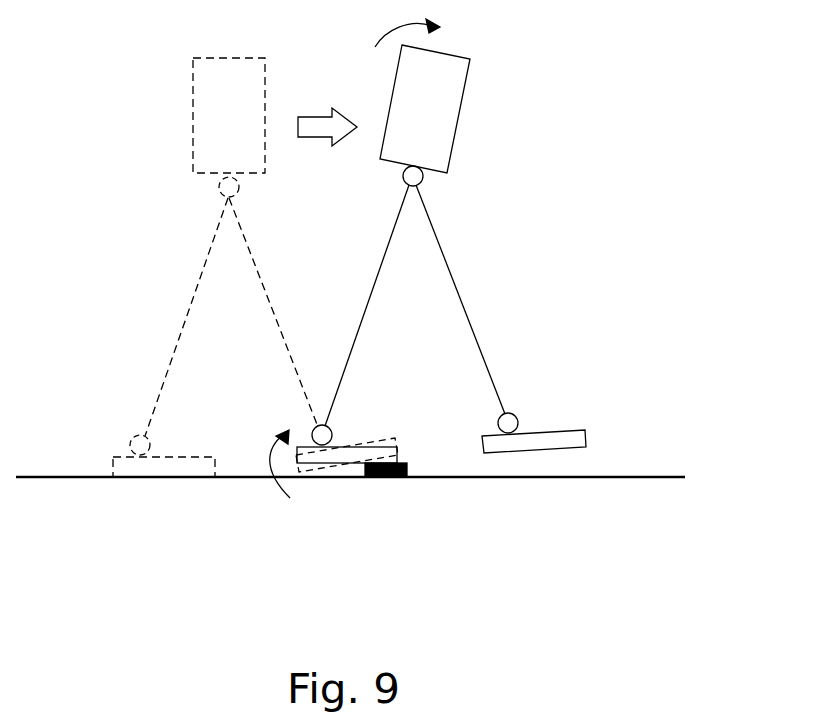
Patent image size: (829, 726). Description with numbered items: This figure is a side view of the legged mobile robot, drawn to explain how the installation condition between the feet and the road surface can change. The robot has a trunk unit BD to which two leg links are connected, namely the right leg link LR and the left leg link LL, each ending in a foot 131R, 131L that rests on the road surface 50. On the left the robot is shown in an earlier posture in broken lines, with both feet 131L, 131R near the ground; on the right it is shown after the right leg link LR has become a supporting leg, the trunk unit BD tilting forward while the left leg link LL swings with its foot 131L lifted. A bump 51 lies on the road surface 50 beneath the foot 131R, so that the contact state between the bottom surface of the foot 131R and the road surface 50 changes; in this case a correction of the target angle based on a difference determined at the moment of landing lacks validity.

The trunk unit BD is at (195, 82).
The left leg link LL is at (172, 312).
The right leg link LR is at (288, 306).
The foot 131L is at (150, 480).
The foot 131R is at (327, 478).
The road surface 50 is at (37, 477).
The bump 51 is at (400, 477).